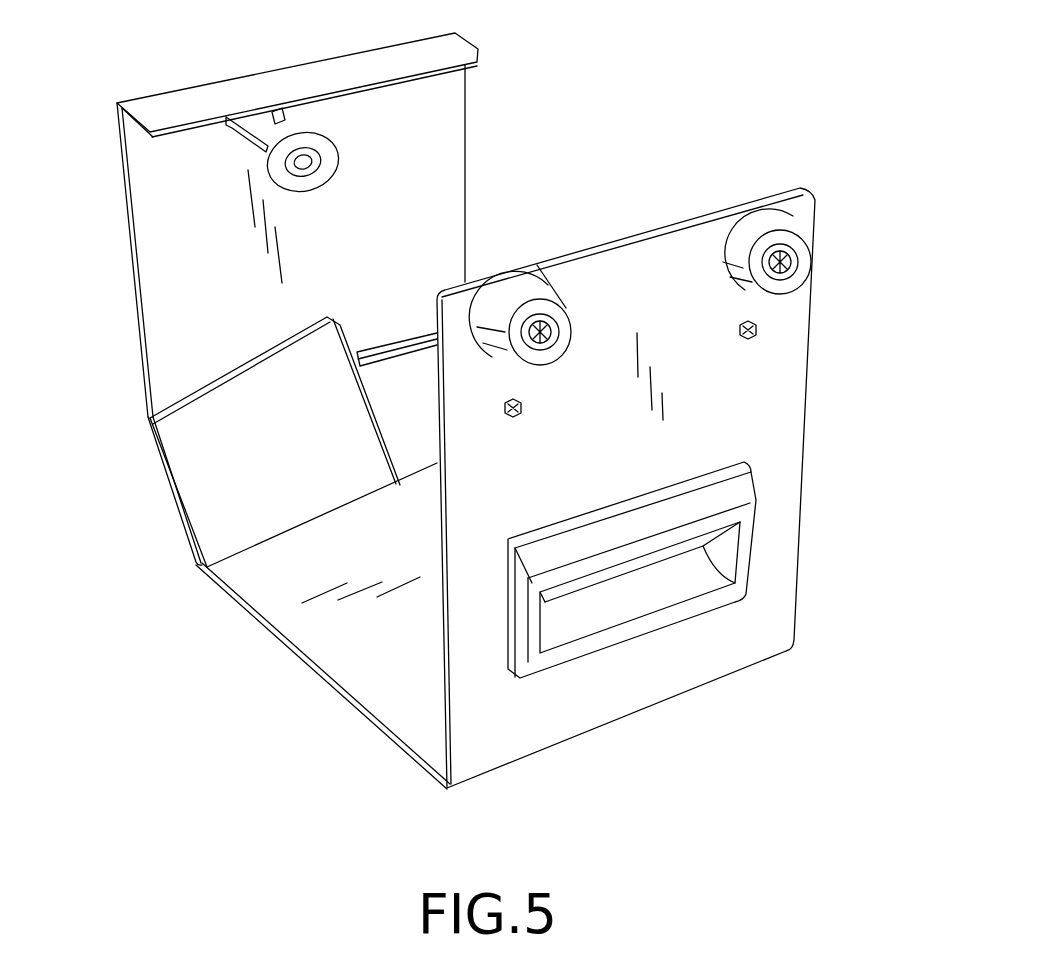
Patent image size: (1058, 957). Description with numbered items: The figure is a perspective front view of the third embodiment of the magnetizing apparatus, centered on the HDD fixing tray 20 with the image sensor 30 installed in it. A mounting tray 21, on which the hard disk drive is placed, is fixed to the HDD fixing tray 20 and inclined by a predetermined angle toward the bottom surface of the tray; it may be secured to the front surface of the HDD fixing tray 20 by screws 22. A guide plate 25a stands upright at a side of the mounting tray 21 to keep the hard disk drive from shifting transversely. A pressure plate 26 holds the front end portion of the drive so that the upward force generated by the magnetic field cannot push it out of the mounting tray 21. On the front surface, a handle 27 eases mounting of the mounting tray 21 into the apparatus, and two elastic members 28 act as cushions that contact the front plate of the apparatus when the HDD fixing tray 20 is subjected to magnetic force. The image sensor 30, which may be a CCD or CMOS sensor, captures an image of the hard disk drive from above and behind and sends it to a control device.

The HDD fixing tray 20 is at (527, 70).
The mounting tray 21 is at (193, 560).
The screws 22 is at (527, 397).
The guide plate 25a is at (203, 460).
The pressure plate 26 is at (386, 343).
The handle 27 is at (680, 608).
The elastic members 28 is at (480, 357).
The image sensor 30 is at (335, 157).